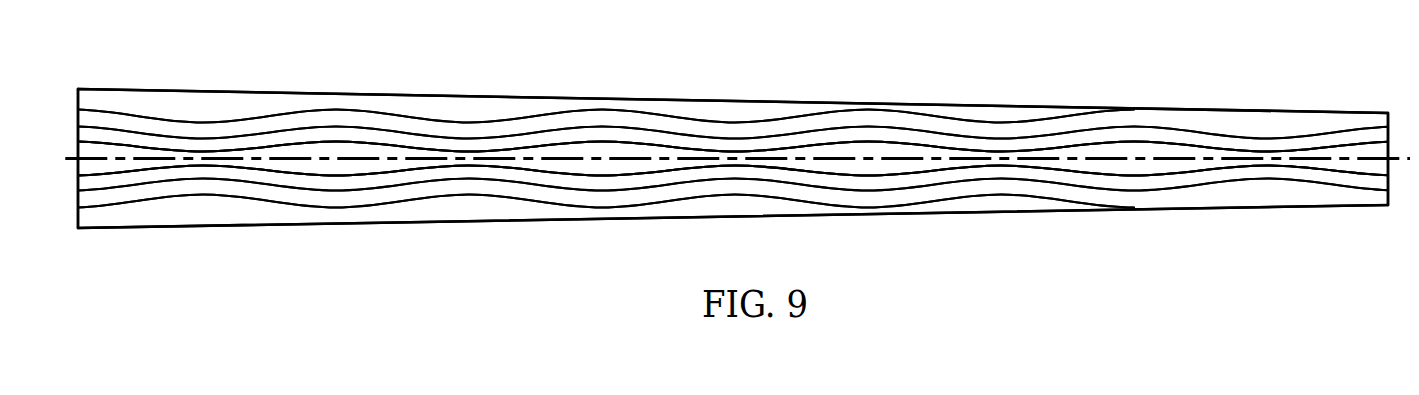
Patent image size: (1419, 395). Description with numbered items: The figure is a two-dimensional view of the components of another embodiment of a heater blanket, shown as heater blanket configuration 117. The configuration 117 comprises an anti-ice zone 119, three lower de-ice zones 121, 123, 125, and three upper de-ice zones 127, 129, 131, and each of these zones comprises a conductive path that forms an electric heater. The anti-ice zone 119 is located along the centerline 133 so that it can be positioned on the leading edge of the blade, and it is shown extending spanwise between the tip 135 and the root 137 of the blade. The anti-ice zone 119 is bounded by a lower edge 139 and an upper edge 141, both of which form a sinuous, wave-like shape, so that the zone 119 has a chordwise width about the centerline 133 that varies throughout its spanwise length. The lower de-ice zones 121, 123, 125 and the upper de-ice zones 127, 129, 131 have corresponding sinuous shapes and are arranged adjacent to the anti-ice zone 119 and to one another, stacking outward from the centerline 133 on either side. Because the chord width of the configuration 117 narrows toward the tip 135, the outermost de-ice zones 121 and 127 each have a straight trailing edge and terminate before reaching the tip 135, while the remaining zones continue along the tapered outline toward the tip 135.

The heater blanket configuration 117 is at (246, 70).
The anti-ice zone 119 is at (617, 153).
The lower de-ice zone 121 is at (463, 208).
The lower de-ice zone 123 is at (340, 200).
The lower de-ice zone 125 is at (565, 180).
The upper de-ice zone 127 is at (463, 108).
The upper de-ice zone 129 is at (338, 118).
The upper de-ice zone 131 is at (563, 135).
The centerline 133 is at (835, 158).
The tip 135 is at (1390, 185).
The root 137 is at (77, 219).
The lower edge 139 is at (648, 173).
The upper edge 141 is at (667, 147).